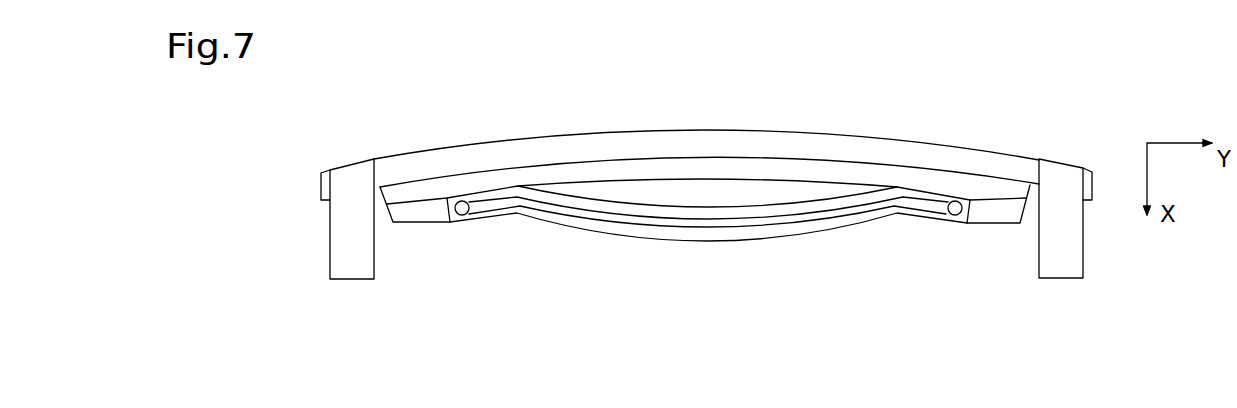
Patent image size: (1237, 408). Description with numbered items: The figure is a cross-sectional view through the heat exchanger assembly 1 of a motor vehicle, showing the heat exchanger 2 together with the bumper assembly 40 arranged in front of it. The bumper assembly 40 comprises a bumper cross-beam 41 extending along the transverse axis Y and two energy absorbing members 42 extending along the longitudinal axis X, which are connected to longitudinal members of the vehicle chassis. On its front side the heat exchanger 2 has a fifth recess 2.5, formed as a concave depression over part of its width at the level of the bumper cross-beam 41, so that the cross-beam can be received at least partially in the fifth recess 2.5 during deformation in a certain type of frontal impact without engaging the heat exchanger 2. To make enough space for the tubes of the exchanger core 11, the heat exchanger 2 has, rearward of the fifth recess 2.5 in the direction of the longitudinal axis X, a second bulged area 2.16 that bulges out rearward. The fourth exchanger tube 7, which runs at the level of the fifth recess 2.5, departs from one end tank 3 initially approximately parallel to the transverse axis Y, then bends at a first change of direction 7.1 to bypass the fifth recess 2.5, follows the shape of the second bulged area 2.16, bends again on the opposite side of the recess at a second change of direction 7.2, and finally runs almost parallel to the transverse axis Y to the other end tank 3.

The heat exchanger assembly 1 is at (898, 100).
The heat exchanger 2 is at (520, 160).
The fifth recess 2.5 is at (638, 190).
The second bulged area 2.16 is at (615, 249).
The end tank 3 is at (462, 201).
The fourth exchanger tube 7 is at (697, 230).
The first change of direction 7.1 is at (512, 212).
The second change of direction 7.2 is at (903, 214).
The exchanger core 11 is at (575, 253).
The bumper assembly 40 is at (1043, 145).
The bumper cross-beam 41 is at (807, 130).
The energy absorbing member 42 is at (332, 233).